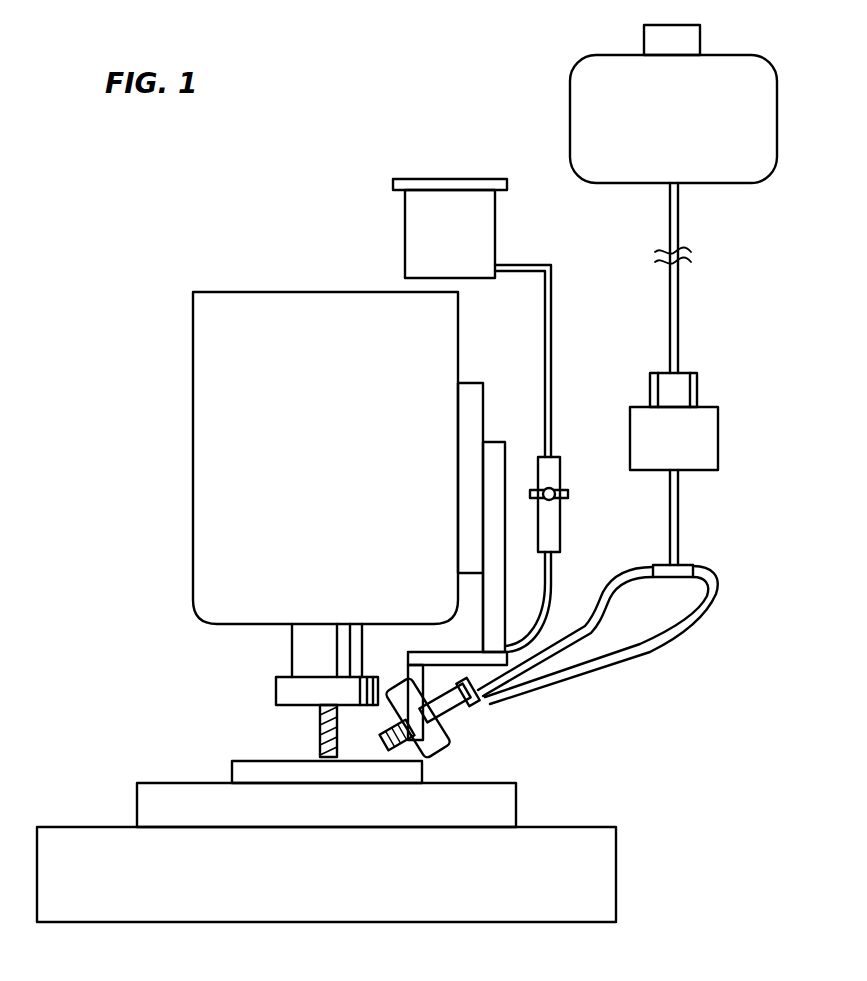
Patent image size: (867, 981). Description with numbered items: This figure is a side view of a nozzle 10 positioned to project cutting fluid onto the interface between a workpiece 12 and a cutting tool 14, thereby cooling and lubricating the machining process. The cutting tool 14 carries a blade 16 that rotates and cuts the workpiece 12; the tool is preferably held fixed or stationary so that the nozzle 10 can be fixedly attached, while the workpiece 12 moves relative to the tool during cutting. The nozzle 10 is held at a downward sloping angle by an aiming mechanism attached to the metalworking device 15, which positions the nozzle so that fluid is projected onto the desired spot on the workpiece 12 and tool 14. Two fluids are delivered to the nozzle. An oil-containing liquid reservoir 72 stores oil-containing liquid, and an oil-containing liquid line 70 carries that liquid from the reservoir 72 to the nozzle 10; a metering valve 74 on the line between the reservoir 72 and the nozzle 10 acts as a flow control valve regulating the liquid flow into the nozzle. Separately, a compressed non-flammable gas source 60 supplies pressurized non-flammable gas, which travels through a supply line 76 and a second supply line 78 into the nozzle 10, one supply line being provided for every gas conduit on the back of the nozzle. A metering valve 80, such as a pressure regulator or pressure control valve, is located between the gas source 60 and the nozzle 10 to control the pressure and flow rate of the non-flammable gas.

The nozzle 10 is at (463, 731).
The workpiece 12 is at (243, 771).
The cutting tool 14 is at (318, 722).
The metalworking device 15 is at (193, 500).
The blade 16 is at (338, 746).
The compressed non-flammable gas source 60 is at (747, 68).
The oil-containing liquid line 70 is at (550, 616).
The oil-containing liquid reservoir 72 is at (428, 205).
The metering valve 74 is at (550, 522).
The supply line 76 is at (713, 598).
The second supply line 78 is at (600, 608).
The metering valve 80 is at (712, 430).